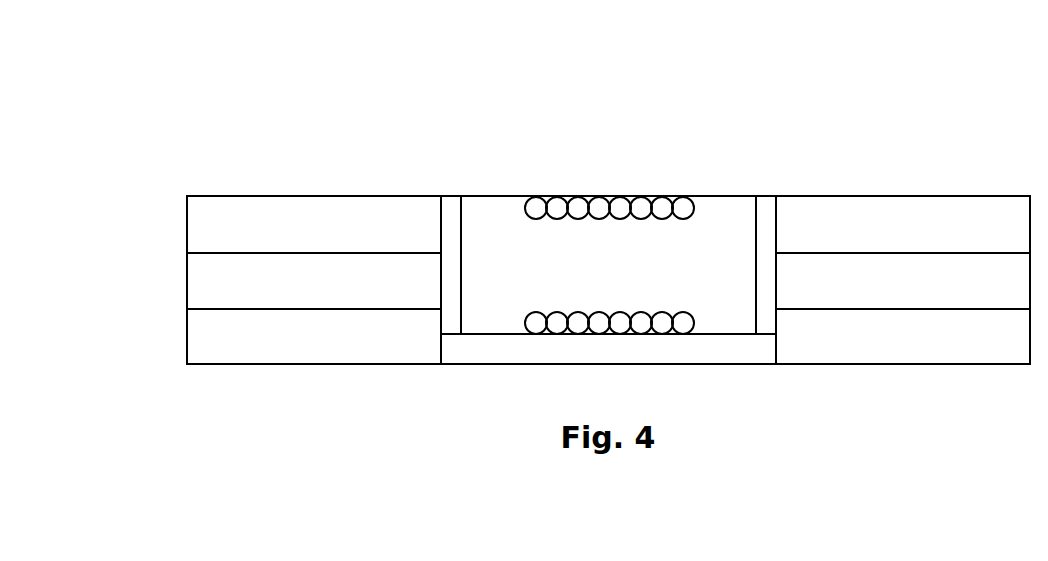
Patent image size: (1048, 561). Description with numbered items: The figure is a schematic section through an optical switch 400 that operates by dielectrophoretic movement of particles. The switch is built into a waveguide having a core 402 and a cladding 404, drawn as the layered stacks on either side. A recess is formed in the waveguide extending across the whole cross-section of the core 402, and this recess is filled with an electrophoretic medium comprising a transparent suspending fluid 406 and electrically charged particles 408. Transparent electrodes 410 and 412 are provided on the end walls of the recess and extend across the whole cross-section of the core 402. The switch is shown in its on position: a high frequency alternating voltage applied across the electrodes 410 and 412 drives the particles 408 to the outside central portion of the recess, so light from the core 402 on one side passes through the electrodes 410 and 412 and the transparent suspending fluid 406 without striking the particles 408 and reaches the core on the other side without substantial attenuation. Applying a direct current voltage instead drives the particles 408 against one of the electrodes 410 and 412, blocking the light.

The optical switch 400 is at (142, 173).
The core 402 is at (293, 292).
The cladding 404 is at (231, 238).
The transparent suspending fluid 406 is at (587, 275).
The electrically charged particles 408 is at (574, 208).
The transparent electrode 410 is at (451, 238).
The transparent electrode 412 is at (766, 228).